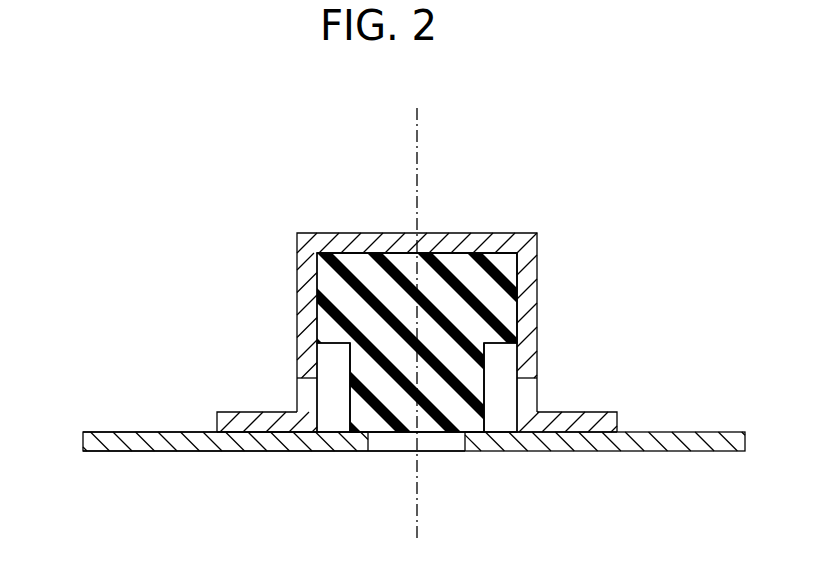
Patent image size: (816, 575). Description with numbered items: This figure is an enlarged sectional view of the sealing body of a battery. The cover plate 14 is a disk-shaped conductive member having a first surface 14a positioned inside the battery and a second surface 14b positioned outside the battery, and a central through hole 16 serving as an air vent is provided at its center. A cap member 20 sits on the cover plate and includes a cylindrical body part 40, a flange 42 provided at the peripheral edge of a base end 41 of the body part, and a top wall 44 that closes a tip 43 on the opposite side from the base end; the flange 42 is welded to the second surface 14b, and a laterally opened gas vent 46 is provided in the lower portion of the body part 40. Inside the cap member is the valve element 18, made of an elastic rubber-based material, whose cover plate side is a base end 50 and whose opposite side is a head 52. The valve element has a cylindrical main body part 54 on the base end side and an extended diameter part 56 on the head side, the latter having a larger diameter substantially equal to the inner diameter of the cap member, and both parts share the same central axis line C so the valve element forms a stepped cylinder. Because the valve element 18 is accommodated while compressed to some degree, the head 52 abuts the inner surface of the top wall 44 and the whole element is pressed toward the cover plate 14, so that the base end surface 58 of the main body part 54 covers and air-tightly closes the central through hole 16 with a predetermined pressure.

The cover plate 14 is at (83, 437).
The first surface 14a is at (107, 451).
The second surface 14b is at (110, 432).
The central through hole 16 is at (467, 436).
The valve element 18 is at (357, 260).
The cap member 20 is at (411, 334).
The body part 40 is at (537, 295).
The base end 41 is at (535, 432).
The flange 42 is at (588, 412).
The tip 43 is at (537, 233).
The top wall 44 is at (458, 233).
The gas vent 46 is at (297, 390).
The base end 50 is at (347, 404).
The head 52 is at (488, 252).
The main body part 54 is at (483, 433).
The extended diameter part 56 is at (517, 275).
The base end surface 58 is at (385, 432).
The central axis line C is at (417, 135).